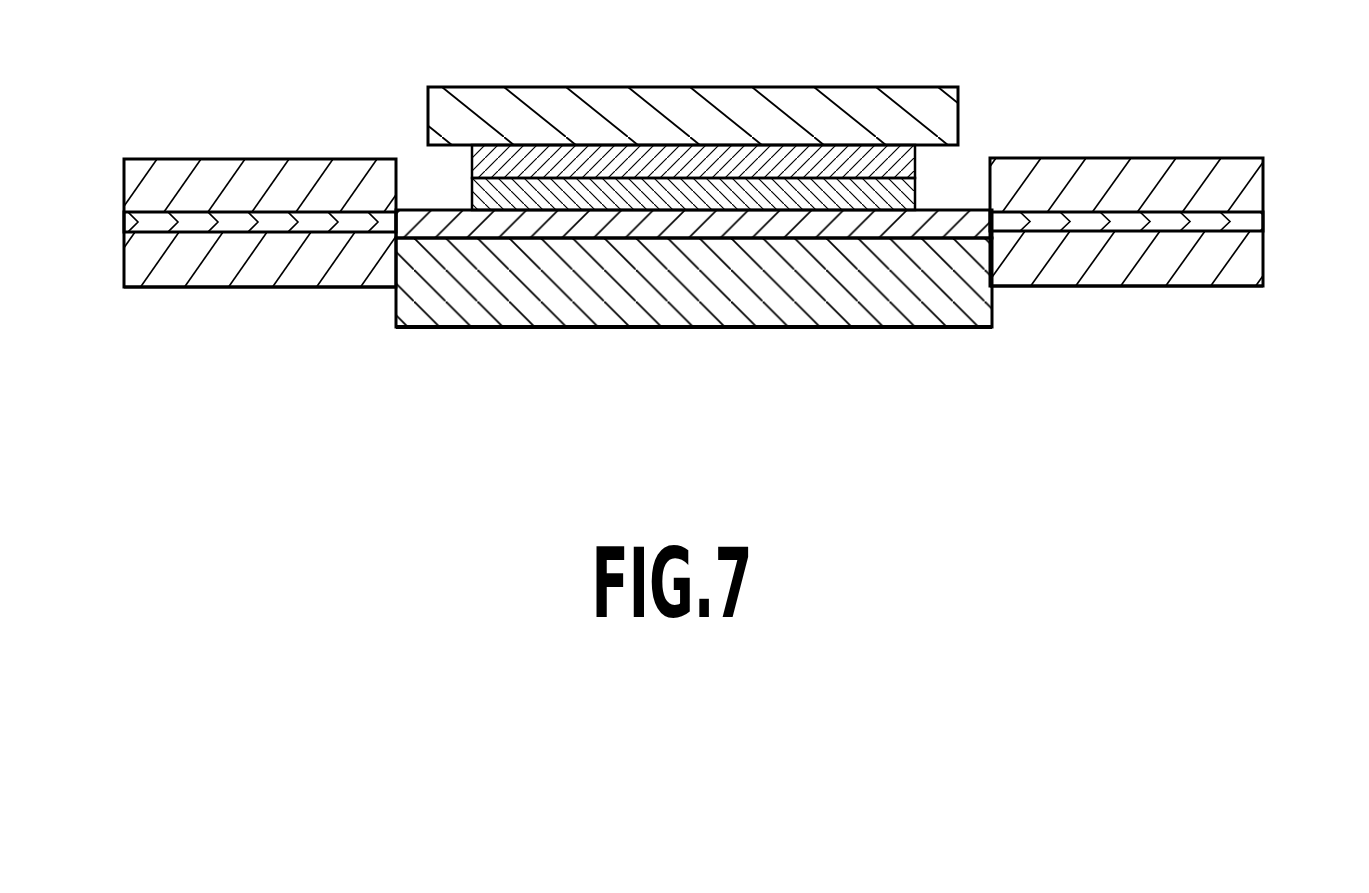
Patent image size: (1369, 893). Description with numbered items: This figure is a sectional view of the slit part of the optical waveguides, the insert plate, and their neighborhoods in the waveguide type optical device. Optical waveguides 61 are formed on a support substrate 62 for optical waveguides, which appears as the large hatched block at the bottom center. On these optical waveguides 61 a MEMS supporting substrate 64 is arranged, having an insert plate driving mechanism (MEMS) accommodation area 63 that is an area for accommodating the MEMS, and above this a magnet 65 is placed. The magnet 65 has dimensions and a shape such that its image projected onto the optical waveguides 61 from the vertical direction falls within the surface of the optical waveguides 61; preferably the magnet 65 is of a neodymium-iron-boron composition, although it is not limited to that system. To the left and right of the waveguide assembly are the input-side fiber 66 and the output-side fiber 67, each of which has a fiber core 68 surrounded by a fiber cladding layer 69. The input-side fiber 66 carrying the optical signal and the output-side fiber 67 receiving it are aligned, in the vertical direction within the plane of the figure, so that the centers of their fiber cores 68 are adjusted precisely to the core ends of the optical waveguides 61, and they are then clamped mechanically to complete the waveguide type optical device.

The optical waveguides 61 is at (633, 230).
The support substrate 62 is at (922, 315).
The insert plate driving mechanism (MEMS) accommodation area 63 is at (603, 185).
The MEMS supporting substrate 64 is at (518, 158).
The magnet 65 is at (473, 87).
The input-side fiber 66 is at (180, 287).
The output-side fiber 67 is at (1058, 286).
The fiber core 68 is at (273, 218).
The fiber cladding layer 69 is at (143, 187).